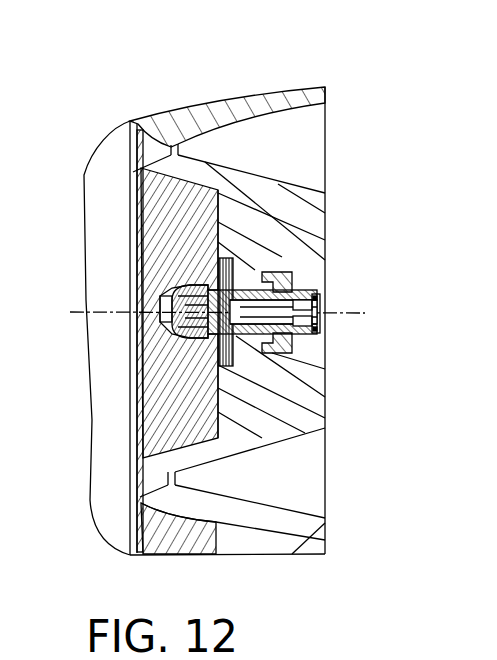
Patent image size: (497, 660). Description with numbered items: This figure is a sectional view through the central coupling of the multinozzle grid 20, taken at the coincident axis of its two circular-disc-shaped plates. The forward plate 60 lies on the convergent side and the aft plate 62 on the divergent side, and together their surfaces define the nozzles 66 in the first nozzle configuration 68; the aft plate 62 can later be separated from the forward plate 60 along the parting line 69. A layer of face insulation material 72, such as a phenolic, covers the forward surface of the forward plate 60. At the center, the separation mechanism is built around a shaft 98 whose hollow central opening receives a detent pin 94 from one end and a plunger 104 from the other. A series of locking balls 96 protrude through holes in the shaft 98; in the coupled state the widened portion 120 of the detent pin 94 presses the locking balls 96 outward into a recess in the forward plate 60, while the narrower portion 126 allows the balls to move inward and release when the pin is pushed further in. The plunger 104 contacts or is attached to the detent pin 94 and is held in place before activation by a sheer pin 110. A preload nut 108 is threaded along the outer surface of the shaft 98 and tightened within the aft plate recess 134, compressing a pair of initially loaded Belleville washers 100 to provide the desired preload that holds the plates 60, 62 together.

The multinozzle grid 20 is at (124, 93).
The forward plate 60 is at (183, 108).
The aft plate 62 is at (262, 95).
The nozzles 66 is at (397, 122).
The first nozzle configuration 68 is at (330, 490).
The face insulation material 72 is at (135, 204).
The locking balls 96 is at (192, 287).
The narrower portion 126 is at (160, 303).
The widened portion 120 is at (172, 318).
The preload nut 108 is at (259, 279).
The plunger 104 is at (322, 320).
The sheer pin 110 is at (320, 297).
The Belleville washers 100 is at (232, 268).
The aft plate recess 134 is at (328, 344).
The shaft 98 is at (291, 336).
The detent pin 94 is at (237, 340).
The parting line 69 is at (217, 408).